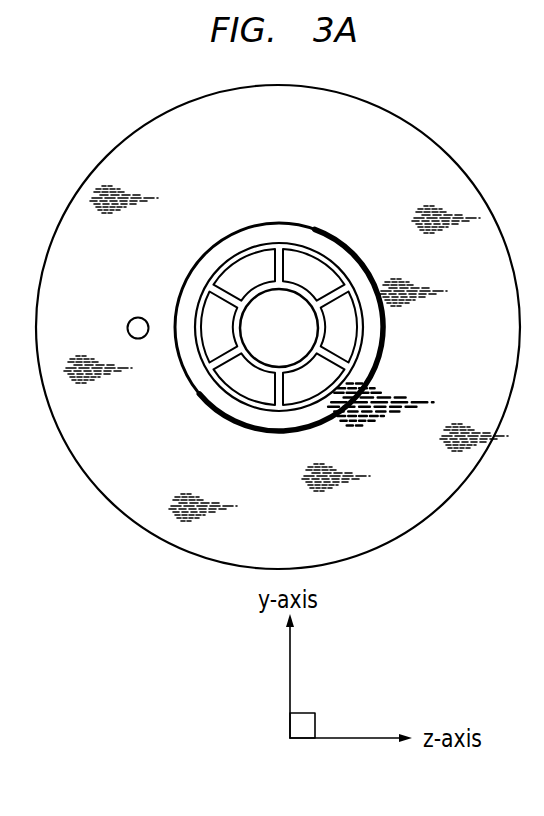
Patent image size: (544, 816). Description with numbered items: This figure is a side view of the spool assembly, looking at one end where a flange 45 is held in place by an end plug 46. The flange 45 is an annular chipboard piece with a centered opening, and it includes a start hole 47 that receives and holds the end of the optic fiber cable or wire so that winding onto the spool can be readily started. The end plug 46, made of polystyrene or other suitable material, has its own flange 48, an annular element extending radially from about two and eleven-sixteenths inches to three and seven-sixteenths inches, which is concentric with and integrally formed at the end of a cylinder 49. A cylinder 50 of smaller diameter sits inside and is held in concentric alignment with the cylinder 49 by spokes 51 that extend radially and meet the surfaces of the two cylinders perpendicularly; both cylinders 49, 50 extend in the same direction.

The flange 45 is at (423, 483).
The end plug 46 is at (285, 348).
The start hole 47 is at (131, 318).
The flange 48 is at (385, 362).
The cylinder 49 is at (365, 338).
The cylinder 50 is at (300, 362).
The spokes 51 is at (229, 287).